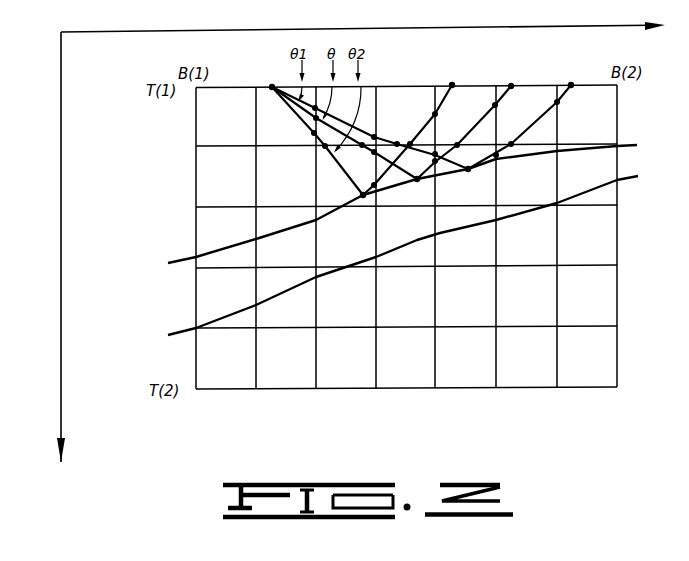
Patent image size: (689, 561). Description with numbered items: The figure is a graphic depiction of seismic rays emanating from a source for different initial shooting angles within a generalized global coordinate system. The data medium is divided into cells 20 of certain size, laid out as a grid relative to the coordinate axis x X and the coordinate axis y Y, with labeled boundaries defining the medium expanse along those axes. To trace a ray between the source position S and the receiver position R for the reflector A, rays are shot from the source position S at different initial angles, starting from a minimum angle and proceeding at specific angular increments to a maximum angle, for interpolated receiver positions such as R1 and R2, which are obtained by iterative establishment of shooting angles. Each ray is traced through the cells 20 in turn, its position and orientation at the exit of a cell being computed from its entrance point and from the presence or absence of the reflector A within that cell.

The cells 20 is at (298, 191).
The reflector A is at (398, 236).
The source position S is at (269, 76).
The receiver position R is at (510, 76).
The interpolated receiver position R1 is at (573, 75).
The interpolated receiver position R2 is at (451, 75).
The coordinate axis x X is at (371, 25).
The coordinate axis y Y is at (60, 261).